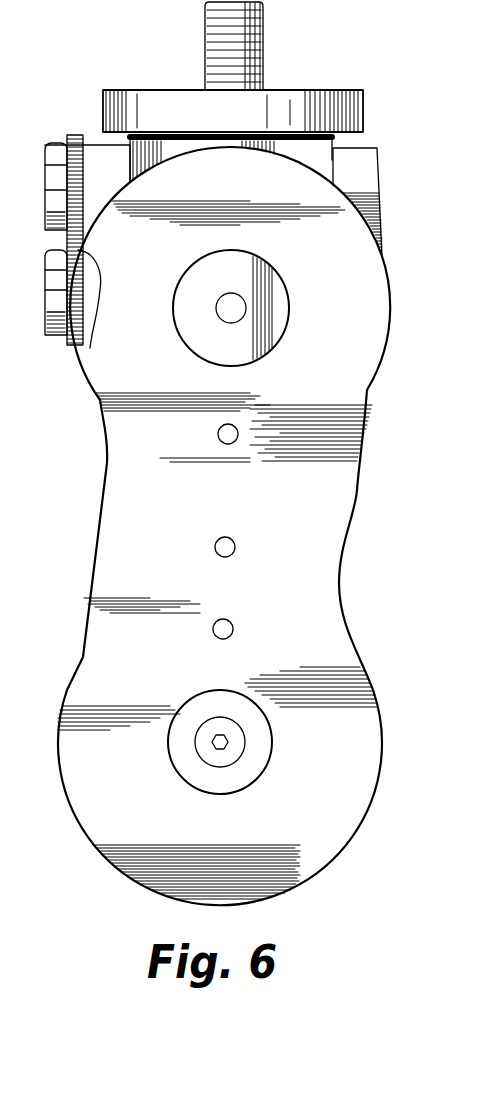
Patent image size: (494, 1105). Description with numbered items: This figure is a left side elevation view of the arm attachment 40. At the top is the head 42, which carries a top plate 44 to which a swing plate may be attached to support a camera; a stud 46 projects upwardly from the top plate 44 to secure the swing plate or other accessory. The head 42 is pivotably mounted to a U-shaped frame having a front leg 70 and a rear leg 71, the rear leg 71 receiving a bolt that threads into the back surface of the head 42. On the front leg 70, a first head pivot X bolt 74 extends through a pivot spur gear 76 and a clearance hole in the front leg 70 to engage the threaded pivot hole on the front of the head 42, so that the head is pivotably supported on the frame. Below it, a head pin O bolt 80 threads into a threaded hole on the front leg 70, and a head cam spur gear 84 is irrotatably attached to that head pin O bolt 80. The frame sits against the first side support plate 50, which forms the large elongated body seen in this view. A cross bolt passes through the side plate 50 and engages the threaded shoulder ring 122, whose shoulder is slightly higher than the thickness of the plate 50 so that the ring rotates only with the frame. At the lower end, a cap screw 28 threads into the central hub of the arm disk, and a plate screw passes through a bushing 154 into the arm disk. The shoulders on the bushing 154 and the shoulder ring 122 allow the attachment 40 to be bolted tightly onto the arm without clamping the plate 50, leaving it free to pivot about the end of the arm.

The attachment 40 is at (78, 488).
The first side support plate 50 is at (331, 489).
The threaded shoulder ring 122 is at (278, 303).
The bushing 154 is at (245, 777).
The cap screw 28 is at (222, 742).
The stud 46 is at (263, 37).
The top plate 44 is at (295, 108).
The head 42 is at (177, 147).
The rear leg 71 is at (363, 164).
The front leg 70 is at (105, 146).
The pivot spur gear 76 is at (78, 180).
The first head pivot X bolt 74 is at (45, 146).
The head pin O bolt 80 is at (46, 335).
The head cam spur gear 84 is at (90, 348).